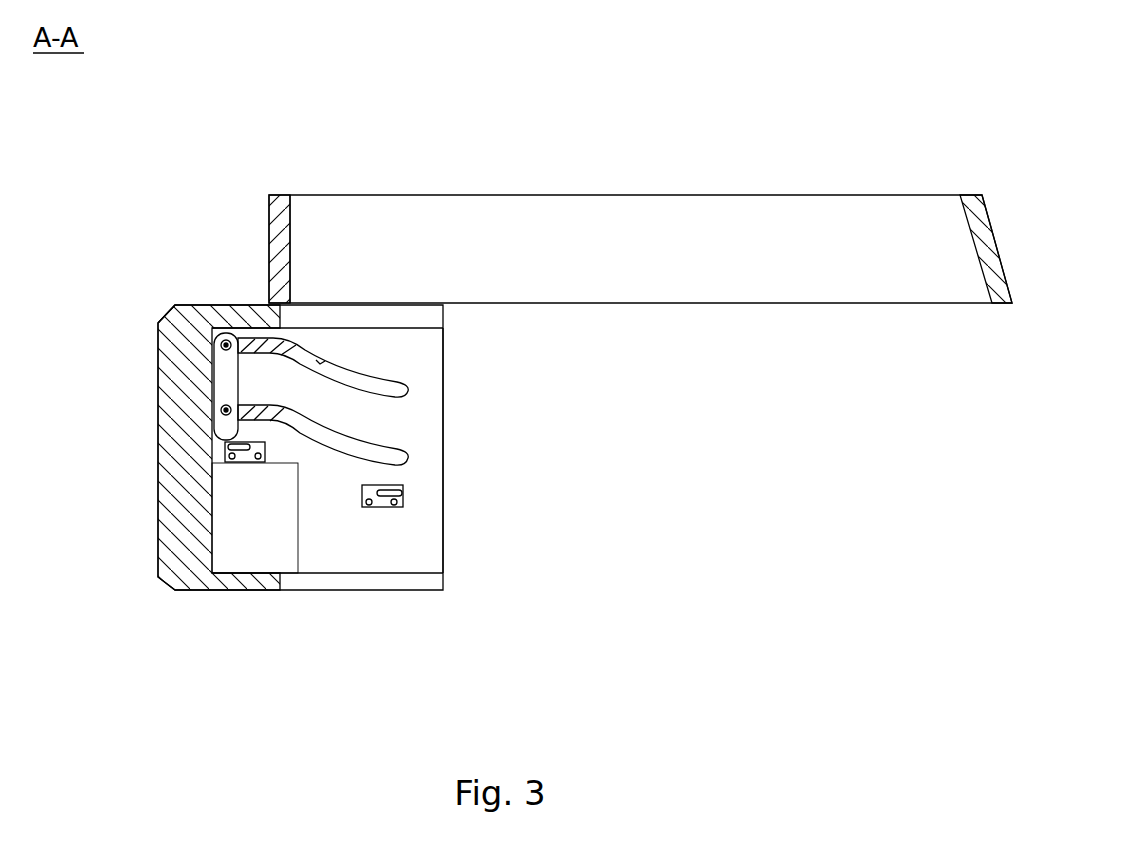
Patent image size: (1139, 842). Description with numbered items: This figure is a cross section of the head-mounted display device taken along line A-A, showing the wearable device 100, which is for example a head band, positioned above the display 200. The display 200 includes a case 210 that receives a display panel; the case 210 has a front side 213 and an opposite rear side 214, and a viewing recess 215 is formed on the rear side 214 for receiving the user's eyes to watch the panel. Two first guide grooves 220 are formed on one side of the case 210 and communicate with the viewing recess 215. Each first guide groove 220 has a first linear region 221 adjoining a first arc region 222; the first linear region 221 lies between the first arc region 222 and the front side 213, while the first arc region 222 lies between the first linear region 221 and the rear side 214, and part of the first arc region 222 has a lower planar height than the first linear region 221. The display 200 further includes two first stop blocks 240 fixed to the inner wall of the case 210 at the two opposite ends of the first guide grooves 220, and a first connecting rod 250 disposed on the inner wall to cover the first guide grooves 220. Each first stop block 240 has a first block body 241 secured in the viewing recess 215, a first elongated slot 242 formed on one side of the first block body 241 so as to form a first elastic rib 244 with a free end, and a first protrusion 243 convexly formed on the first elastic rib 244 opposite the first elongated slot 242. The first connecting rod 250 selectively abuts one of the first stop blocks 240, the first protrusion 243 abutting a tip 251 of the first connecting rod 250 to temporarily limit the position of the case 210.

The wearable device 100 is at (1000, 247).
The display 200 is at (160, 112).
The case 210 is at (190, 303).
The front side 213 is at (158, 348).
The rear side 214 is at (443, 402).
The viewing recess 215 is at (430, 377).
The first guide groove 220 is at (353, 150).
The first linear region 221 is at (247, 340).
The first arc region 222 is at (360, 380).
The first connecting rod 250 is at (157, 386).
The tip 251 is at (227, 438).
The first stop block 240 is at (87, 677).
The first block body 241 is at (239, 458).
The first elongated slot 242 is at (233, 452).
The first protrusion 243 is at (214, 462).
The first elastic rib 244 is at (245, 451).